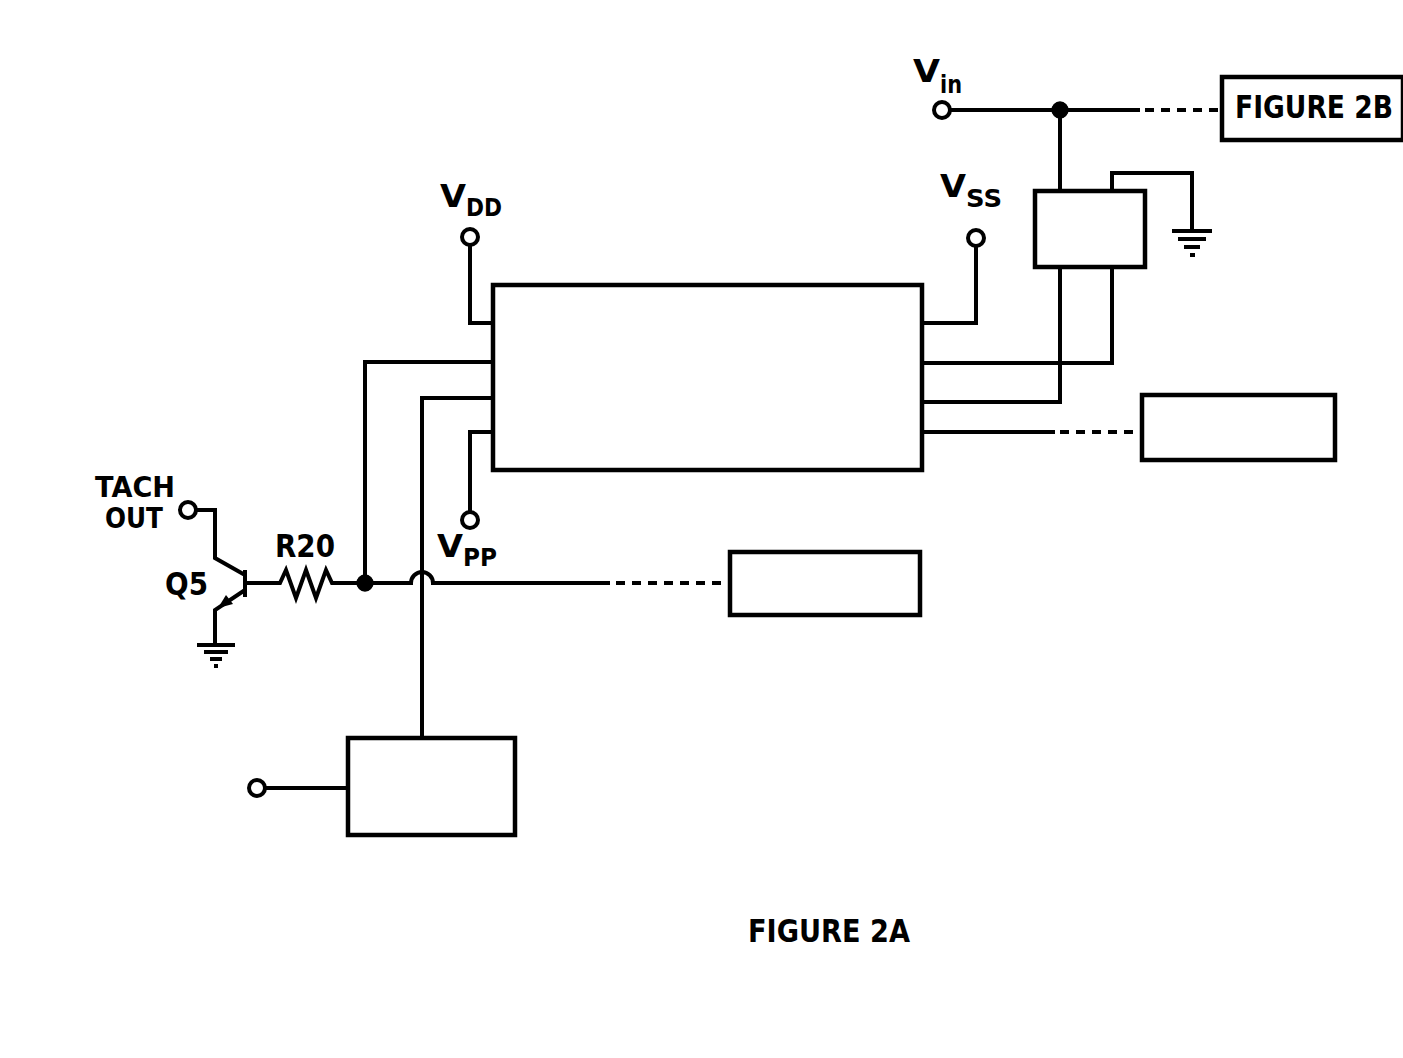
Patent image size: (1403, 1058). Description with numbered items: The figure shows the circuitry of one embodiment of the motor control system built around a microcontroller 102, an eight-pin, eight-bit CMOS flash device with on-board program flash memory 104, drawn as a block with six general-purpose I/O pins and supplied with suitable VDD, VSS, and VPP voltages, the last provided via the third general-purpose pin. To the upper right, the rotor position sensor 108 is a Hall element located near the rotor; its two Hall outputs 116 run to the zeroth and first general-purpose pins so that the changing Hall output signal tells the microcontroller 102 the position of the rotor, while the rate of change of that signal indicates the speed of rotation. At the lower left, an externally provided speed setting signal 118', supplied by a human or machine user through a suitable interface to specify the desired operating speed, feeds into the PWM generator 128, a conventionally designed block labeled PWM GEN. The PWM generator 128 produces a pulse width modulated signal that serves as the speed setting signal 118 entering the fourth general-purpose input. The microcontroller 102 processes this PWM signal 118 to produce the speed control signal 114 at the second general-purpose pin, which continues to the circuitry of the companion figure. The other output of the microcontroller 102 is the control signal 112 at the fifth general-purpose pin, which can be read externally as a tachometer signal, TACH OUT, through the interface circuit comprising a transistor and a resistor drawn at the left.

The microcontroller 102 is at (707, 377).
The memory 104 is at (707, 377).
The rotor position sensor 108 is at (1145, 255).
The control signal 112 is at (412, 345).
The speed control signal 114 is at (1001, 453).
The Hall outputs 116 is at (1127, 312).
The speed setting signal 118 is at (474, 568).
The external speed setting signal 118' is at (231, 807).
The PWM generator 128 is at (515, 818).